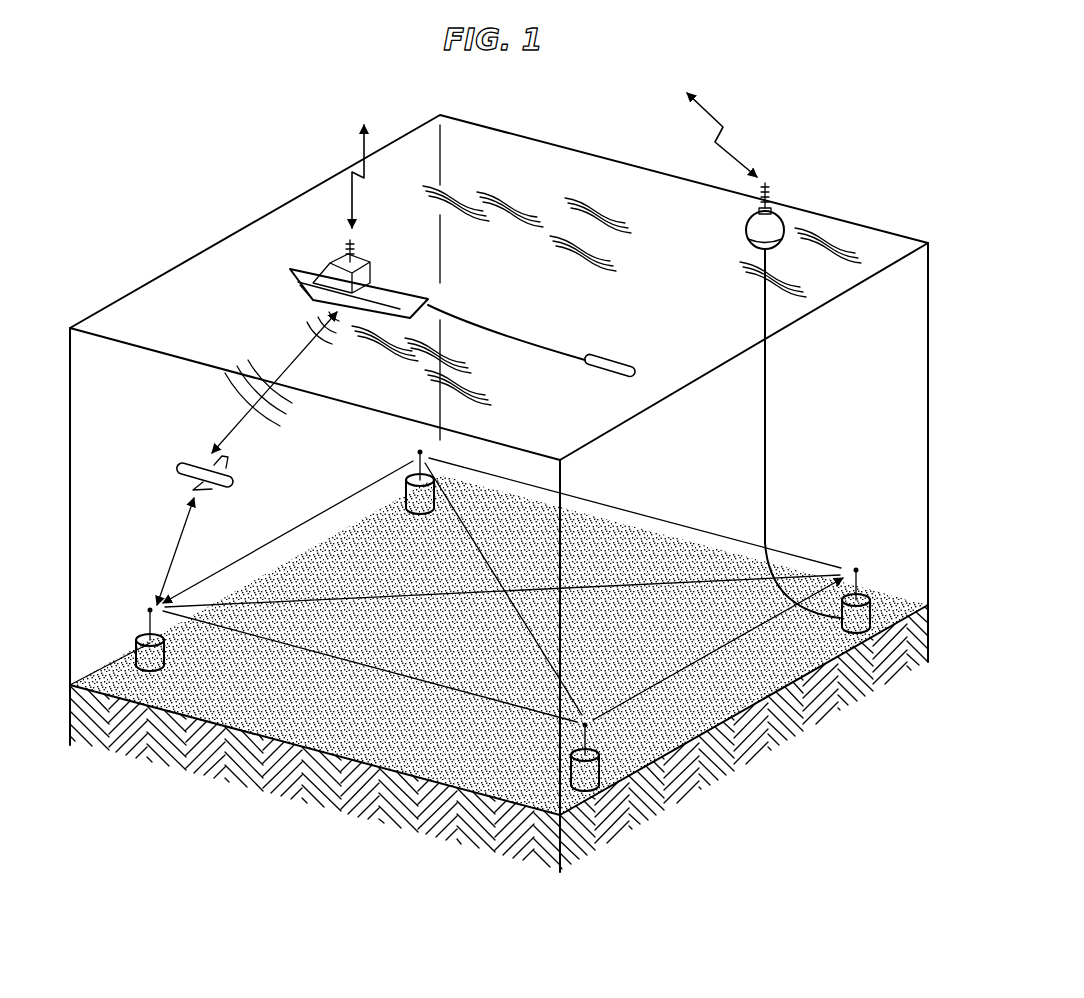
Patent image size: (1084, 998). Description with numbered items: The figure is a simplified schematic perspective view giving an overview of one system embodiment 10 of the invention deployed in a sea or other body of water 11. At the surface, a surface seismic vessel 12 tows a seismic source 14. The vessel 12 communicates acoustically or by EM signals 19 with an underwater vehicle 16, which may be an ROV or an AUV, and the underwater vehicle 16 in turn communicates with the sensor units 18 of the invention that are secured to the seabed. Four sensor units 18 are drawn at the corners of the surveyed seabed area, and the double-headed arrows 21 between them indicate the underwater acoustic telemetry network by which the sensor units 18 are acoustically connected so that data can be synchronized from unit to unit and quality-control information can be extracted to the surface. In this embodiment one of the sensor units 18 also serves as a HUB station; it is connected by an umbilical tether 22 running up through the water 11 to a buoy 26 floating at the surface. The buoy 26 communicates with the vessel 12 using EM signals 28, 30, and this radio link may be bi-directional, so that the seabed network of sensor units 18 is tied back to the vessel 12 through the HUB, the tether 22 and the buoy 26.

The system embodiment 10 is at (203, 212).
The body of water 11 is at (529, 223).
The surface seismic vessel 12 is at (390, 283).
The seismic source 14 is at (612, 357).
The underwater vehicle 16 is at (178, 466).
The sensor units 18 is at (137, 650).
The acoustic or EM signals 19 is at (240, 424).
The double-headed arrows 21 is at (445, 560).
The umbilical tether 22 is at (767, 405).
The buoy 26 is at (785, 222).
The EM signals 28 is at (737, 142).
The EM signals 30 is at (348, 195).